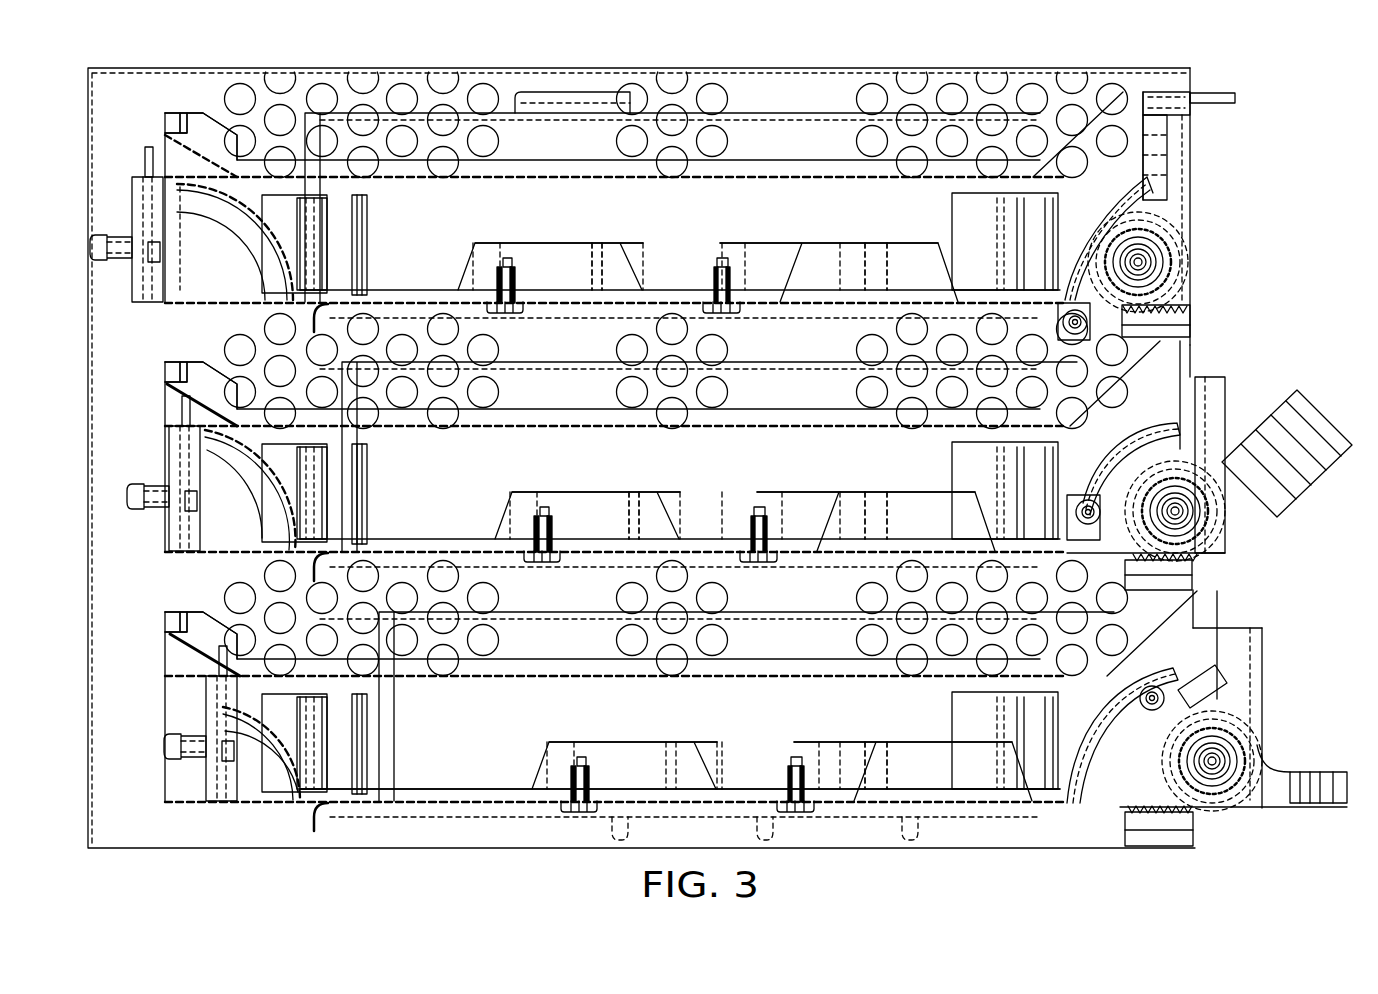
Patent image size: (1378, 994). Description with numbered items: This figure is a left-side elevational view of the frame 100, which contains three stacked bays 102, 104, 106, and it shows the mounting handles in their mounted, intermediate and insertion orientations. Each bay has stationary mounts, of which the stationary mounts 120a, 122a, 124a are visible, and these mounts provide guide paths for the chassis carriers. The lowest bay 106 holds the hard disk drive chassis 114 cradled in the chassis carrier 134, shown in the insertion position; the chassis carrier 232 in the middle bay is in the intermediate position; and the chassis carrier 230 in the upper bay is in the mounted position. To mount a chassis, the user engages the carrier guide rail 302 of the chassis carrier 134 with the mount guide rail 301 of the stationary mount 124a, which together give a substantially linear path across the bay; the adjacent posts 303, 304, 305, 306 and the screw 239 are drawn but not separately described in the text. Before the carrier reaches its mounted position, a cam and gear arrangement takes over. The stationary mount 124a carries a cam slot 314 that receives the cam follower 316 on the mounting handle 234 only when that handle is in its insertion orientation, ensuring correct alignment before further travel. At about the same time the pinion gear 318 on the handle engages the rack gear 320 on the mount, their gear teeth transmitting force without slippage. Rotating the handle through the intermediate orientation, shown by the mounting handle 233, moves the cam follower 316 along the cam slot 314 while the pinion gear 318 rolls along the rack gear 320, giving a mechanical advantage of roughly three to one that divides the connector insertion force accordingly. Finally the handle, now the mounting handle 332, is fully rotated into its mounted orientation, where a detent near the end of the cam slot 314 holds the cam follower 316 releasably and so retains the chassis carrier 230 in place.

The frame 100 is at (1060, 68).
The bay 102 is at (692, 200).
The bay 104 is at (725, 452).
The bay 106 is at (725, 724).
The hard disk drive chassis 114 is at (1252, 630).
The stationary mount 120a is at (200, 125).
The stationary mount 122a is at (200, 378).
The stationary mount 124a is at (200, 627).
The chassis carrier 134 is at (722, 721).
The chassis carrier 230 is at (722, 231).
The chassis carrier 232 is at (722, 480).
The mounting handle 233 is at (1300, 392).
The mounting handle 234 is at (1318, 770).
The adjustment screw 239 is at (120, 236).
The mount guide rail 301 is at (898, 790).
The carrier guide rail 302 is at (977, 795).
The support post 303 is at (772, 545).
The support post 304 is at (908, 548).
The support post 305 is at (803, 290).
The support post 306 is at (908, 302).
The cam slot 314 is at (1105, 218).
The cam follower 316 is at (1090, 324).
The pinion gear 318 is at (1178, 275).
The rack gear 320 is at (1180, 317).
The mounting handle 332 is at (1212, 93).